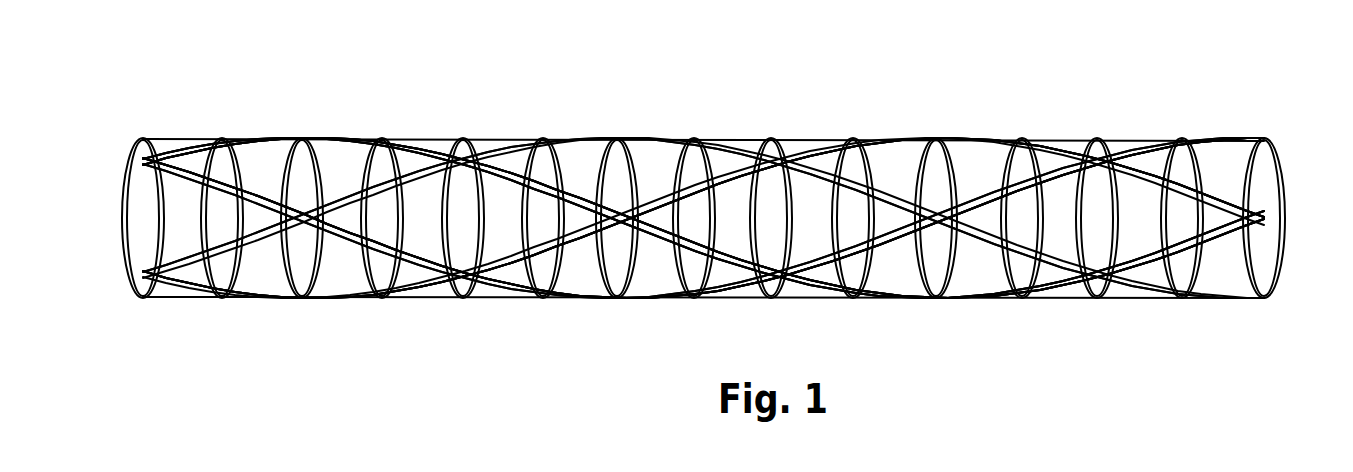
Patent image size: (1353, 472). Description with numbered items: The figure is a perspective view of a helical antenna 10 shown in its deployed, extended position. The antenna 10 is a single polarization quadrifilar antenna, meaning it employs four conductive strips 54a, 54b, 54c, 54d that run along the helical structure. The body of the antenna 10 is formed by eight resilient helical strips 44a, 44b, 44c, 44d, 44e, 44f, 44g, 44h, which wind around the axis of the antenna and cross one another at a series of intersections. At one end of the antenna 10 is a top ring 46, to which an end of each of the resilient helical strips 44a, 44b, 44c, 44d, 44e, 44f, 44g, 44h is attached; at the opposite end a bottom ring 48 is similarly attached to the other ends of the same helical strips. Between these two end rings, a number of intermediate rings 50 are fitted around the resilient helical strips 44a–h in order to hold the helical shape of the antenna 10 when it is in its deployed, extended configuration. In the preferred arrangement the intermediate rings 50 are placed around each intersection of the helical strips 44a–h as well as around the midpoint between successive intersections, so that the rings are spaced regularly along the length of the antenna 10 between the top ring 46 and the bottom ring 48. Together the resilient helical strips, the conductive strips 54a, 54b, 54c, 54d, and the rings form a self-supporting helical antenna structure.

The antenna 10 is at (492, 118).
The resilient helical strip 44a is at (253, 222).
The resilient helical strip 44b is at (877, 158).
The resilient helical strip 44c is at (970, 203).
The resilient helical strip 44d is at (1222, 263).
The resilient helical strip 44e is at (1260, 250).
The resilient helical strip 44f is at (1248, 143).
The resilient helical strip 44g is at (1040, 150).
The resilient helical strip 44h is at (965, 280).
The top ring 46 is at (128, 278).
The bottom ring 48 is at (1285, 253).
The intermediate rings 50 is at (398, 143).
The conductive strip 54a is at (345, 238).
The conductive strip 54b is at (657, 240).
The conductive strip 54c is at (823, 153).
The conductive strip 54d is at (1208, 143).